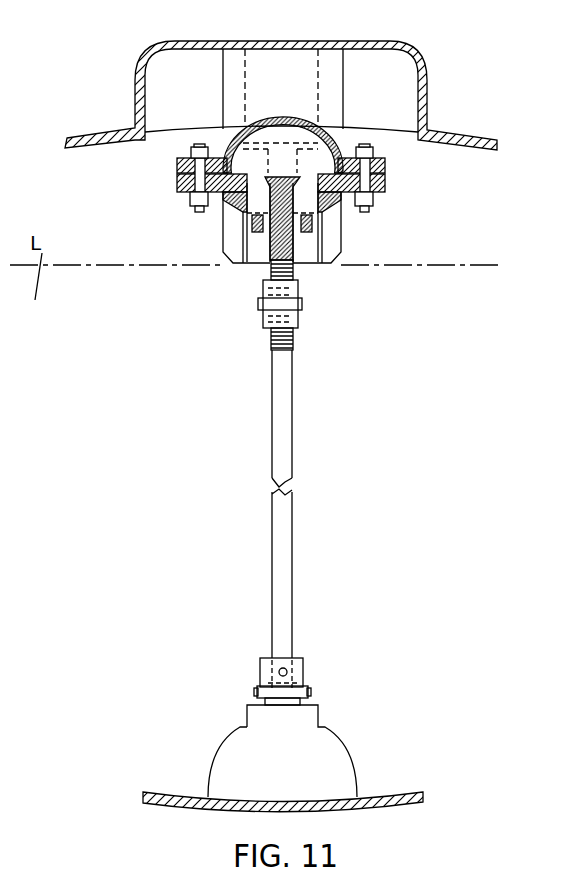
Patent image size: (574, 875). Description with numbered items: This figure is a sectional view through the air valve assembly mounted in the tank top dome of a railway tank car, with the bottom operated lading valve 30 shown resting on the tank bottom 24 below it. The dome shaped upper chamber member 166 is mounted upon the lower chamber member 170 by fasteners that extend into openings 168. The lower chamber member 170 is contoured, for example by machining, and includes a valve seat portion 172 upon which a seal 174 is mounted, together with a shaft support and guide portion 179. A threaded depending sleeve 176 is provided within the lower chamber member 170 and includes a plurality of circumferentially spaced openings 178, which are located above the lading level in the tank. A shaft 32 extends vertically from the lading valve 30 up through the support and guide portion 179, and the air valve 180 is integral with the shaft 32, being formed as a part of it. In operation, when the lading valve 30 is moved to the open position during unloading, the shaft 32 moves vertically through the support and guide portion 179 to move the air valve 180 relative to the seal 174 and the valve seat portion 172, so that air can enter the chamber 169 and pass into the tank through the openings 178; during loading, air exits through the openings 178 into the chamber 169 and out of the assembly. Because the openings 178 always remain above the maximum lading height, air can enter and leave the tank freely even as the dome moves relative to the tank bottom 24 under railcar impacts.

The tank bottom 24 is at (387, 792).
The lading valve 30 is at (310, 758).
The shaft 32 is at (281, 426).
The upper chamber member 166 is at (279, 119).
The openings 168 is at (388, 172).
The chamber 169 is at (241, 152).
The lower chamber member 170 is at (178, 189).
The valve seat portion 172 is at (325, 197).
The seal 174 is at (243, 188).
The depending sleeve 176 is at (246, 234).
The openings 178 is at (317, 225).
The shaft support and guide portion 179 is at (303, 240).
The air valve 180 is at (294, 175).